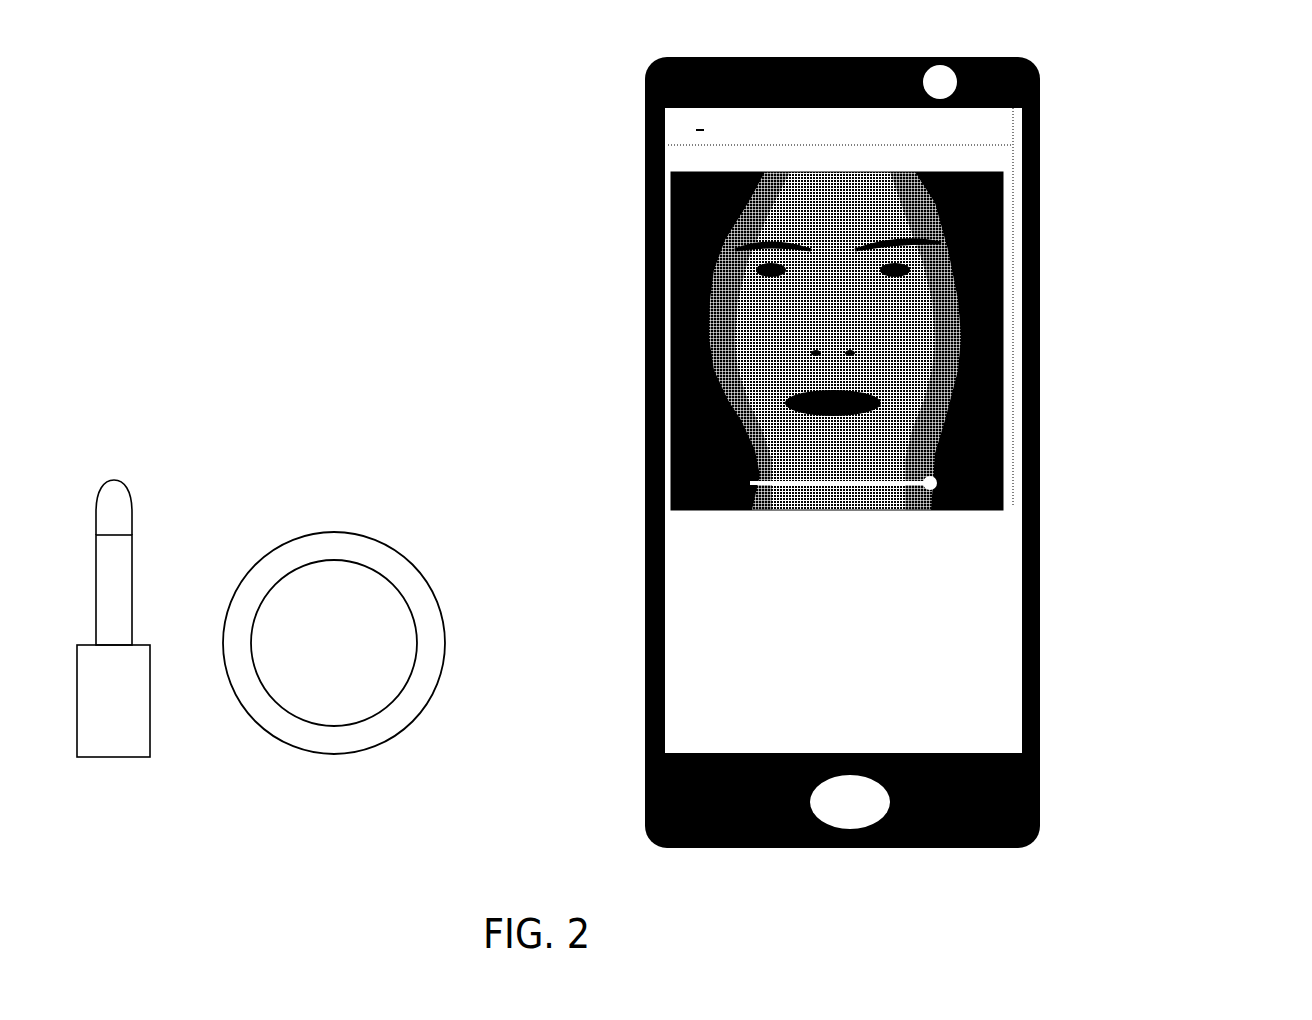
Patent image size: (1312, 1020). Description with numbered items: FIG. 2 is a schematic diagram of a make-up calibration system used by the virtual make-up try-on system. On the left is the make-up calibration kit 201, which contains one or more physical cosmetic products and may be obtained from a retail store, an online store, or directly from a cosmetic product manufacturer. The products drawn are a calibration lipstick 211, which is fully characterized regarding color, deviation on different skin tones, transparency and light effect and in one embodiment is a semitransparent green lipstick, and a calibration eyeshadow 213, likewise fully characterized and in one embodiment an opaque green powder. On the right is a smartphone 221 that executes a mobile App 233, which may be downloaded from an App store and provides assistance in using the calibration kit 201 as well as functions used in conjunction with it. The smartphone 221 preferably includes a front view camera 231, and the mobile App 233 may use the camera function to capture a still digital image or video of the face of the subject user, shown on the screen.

The make-up calibration kit 201 is at (242, 296).
The calibration lipstick 211 is at (132, 538).
The calibration eyeshadow 213 is at (405, 557).
The smartphone 221 is at (1114, 244).
The front view camera 231 is at (940, 82).
The mobile App 233 is at (1013, 525).